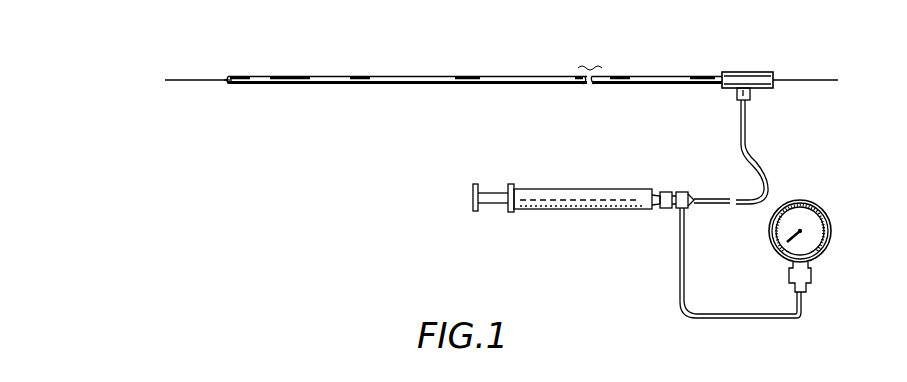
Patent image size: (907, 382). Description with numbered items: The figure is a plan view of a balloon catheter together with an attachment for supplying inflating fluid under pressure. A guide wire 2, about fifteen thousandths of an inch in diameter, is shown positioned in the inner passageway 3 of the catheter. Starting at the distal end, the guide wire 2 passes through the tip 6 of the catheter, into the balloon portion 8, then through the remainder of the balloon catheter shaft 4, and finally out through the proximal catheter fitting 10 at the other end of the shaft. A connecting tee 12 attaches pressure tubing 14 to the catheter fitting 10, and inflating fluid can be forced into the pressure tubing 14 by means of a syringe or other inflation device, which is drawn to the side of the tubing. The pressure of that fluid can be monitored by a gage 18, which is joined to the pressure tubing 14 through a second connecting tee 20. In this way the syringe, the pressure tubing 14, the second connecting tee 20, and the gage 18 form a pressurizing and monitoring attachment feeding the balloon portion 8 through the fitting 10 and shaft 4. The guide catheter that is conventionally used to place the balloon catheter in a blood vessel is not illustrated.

The guide wire 2 is at (197, 78).
The inner passageway 3 is at (228, 83).
The balloon catheter shaft 4 is at (490, 70).
The tip 6 is at (229, 77).
The balloon portion 8 is at (288, 77).
The proximal catheter fitting 10 is at (760, 50).
The connecting tee 12 is at (737, 96).
The pressure tubing 14 is at (746, 143).
The gage 18 is at (832, 238).
The second connecting tee 20 is at (688, 210).